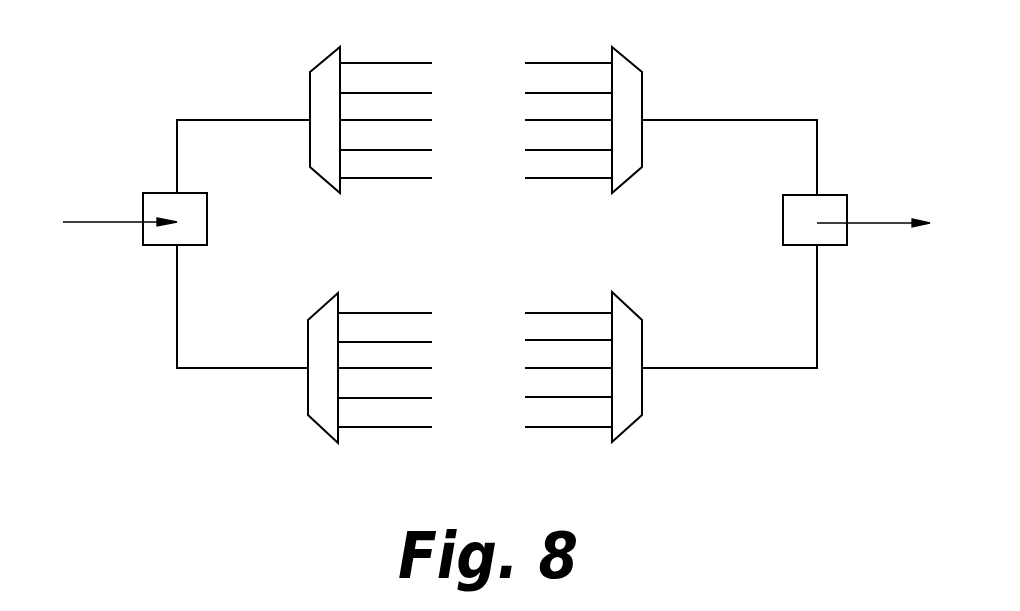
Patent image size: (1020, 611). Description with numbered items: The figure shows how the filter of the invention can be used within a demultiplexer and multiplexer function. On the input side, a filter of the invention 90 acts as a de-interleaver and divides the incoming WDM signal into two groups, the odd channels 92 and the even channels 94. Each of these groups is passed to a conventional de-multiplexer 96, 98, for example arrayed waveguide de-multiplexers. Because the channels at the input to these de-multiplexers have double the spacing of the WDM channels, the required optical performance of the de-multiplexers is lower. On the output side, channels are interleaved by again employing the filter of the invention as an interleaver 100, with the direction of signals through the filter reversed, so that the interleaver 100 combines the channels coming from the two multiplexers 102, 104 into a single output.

The filter of the invention 90 is at (158, 245).
The odd channels 92 is at (228, 120).
The even channels 94 is at (220, 368).
The conventional de-multiplexer 96 is at (324, 56).
The conventional de-multiplexer 98 is at (323, 433).
The interleaver 100 is at (823, 195).
The multiplexer 102 is at (633, 63).
The multiplexer 104 is at (630, 423).